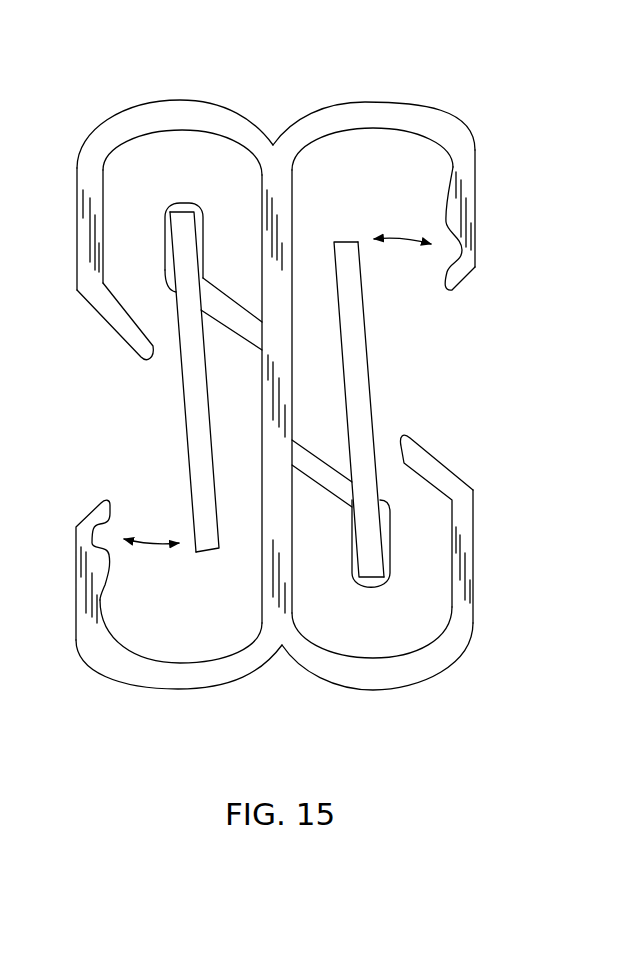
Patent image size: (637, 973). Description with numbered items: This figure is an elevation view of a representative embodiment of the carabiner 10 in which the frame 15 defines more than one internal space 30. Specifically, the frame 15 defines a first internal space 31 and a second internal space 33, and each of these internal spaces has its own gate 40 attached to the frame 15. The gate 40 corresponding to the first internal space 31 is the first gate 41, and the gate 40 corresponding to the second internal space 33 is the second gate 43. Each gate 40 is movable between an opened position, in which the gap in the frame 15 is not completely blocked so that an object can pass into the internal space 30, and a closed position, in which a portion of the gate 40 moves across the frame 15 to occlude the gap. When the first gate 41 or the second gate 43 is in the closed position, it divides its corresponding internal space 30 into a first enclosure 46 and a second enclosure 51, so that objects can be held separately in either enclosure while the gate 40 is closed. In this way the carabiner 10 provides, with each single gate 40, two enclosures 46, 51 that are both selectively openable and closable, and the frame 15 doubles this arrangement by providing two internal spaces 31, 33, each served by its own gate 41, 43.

The carabiner 10 is at (109, 94).
The frame 15 is at (464, 662).
The internal space 30 is at (163, 643).
The first internal space 31 is at (352, 633).
The second internal space 33 is at (197, 630).
The gate 40 is at (195, 442).
The first gate 41 is at (360, 363).
The second gate 43 is at (190, 395).
The first enclosure 46 is at (380, 157).
The second enclosure 51 is at (178, 157).